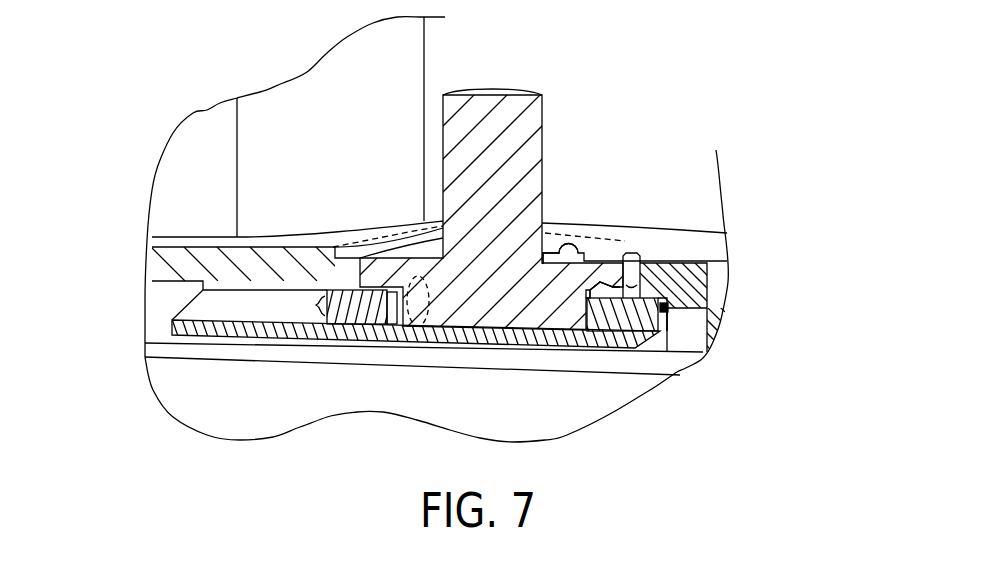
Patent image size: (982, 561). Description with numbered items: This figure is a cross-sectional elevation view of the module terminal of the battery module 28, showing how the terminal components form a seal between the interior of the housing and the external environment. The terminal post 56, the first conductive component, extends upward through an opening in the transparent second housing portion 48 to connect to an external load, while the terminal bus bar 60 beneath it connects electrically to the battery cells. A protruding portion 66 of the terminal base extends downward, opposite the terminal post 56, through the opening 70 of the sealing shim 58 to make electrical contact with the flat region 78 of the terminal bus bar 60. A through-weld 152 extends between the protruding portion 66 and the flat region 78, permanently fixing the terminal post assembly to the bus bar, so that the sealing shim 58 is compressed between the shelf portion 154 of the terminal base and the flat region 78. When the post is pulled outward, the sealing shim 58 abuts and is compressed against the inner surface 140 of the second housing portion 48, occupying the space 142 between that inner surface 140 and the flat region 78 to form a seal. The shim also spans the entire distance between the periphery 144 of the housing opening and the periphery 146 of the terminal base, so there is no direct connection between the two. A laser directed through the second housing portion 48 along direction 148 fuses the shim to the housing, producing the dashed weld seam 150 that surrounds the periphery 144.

The module 28 is at (636, 55).
The second housing portion 48 is at (290, 229).
The terminal post 56 is at (543, 118).
The sealing shim 58 is at (618, 326).
The terminal bus bar 60 is at (672, 309).
The protruding portion 66 is at (497, 312).
The opening 70 is at (593, 326).
The flat region 78 is at (667, 315).
The inner surface 140 is at (340, 250).
The space 142 is at (297, 308).
The periphery 144 is at (618, 245).
The periphery 146 is at (560, 244).
The direction 148 is at (393, 233).
The weld seam 150 is at (633, 244).
The through-weld 152 is at (423, 332).
The shelf portion 154 is at (603, 286).